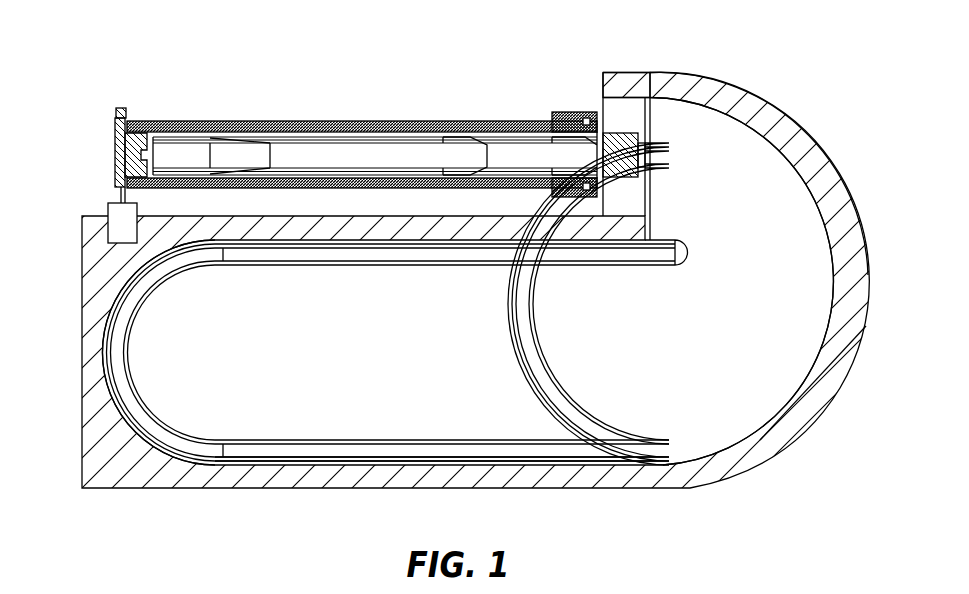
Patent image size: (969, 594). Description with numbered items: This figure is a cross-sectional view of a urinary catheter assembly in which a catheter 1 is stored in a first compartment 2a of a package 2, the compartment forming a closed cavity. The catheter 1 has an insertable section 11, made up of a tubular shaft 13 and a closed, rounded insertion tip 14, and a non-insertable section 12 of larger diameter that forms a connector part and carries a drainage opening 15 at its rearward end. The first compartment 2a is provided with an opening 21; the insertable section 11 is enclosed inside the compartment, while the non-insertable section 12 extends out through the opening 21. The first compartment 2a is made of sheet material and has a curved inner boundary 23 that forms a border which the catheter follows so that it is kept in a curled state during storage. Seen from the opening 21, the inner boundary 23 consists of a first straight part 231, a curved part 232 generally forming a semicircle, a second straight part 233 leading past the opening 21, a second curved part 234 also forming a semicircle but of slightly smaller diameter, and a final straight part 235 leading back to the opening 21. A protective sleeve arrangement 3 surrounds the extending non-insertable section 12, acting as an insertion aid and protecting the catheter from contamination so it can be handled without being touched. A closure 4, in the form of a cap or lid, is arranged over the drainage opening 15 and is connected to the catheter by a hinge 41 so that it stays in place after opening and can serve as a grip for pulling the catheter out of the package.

The catheter 1 is at (760, 160).
The package 2 is at (835, 396).
The first compartment 2a is at (700, 387).
The protective sleeve arrangement 3 is at (236, 122).
The closure 4 is at (115, 157).
The insertable section 11 is at (820, 170).
The non-insertable section 12 is at (327, 145).
The tubular shaft 13 is at (330, 440).
The insertion tip 14 is at (690, 257).
The drainage opening 15 is at (121, 112).
The opening 21 is at (612, 130).
The inner boundary 23 is at (847, 242).
The hinge 41 is at (120, 197).
The first straight part 231 is at (645, 97).
The curved part 232 is at (727, 107).
The second straight part 233 is at (493, 467).
The second curved part 234 is at (103, 347).
The straight part 235 is at (390, 242).